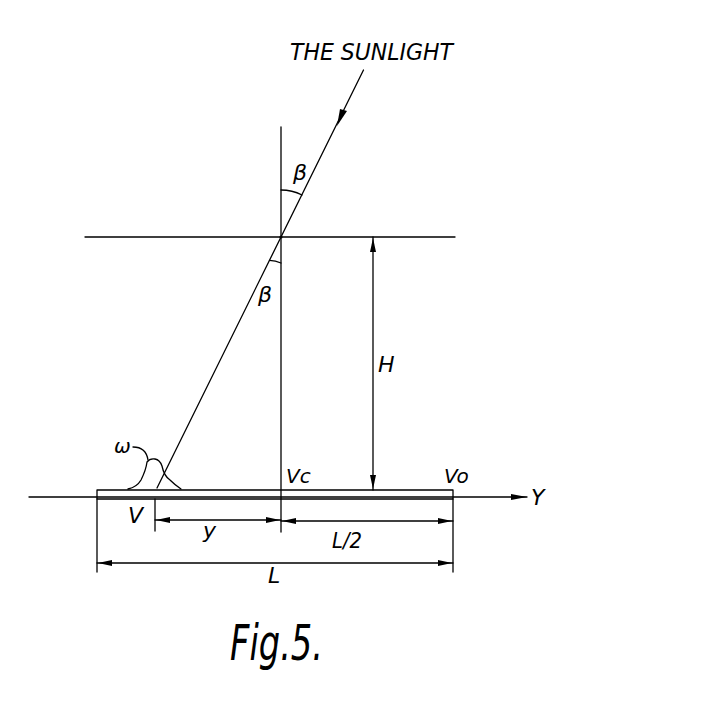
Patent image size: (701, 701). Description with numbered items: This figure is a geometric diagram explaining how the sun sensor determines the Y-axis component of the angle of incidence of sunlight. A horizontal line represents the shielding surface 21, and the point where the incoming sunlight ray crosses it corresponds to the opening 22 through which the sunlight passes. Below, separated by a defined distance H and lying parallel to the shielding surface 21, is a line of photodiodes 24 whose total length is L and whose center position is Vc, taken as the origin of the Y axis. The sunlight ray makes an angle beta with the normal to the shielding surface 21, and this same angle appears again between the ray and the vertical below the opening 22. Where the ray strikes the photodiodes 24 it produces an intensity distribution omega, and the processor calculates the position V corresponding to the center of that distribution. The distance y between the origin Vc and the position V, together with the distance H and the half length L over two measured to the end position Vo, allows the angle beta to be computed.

The shielding surface 21 is at (202, 236).
The opening 22 is at (288, 234).
The photodiodes 24 is at (421, 490).